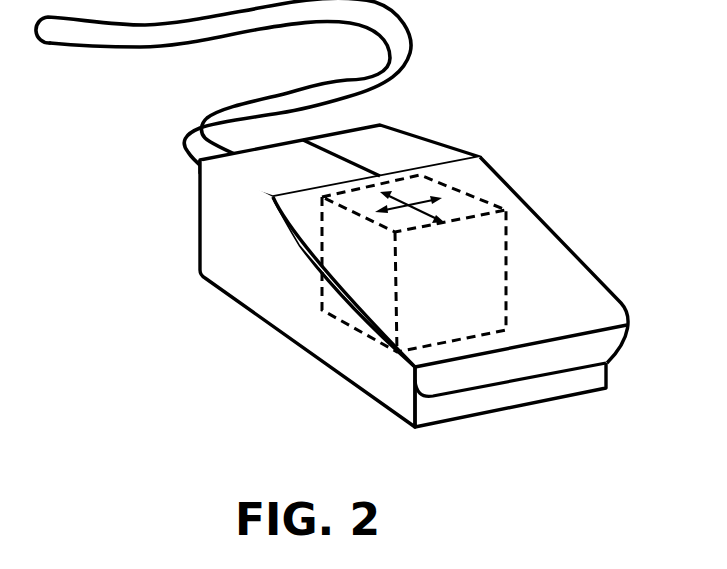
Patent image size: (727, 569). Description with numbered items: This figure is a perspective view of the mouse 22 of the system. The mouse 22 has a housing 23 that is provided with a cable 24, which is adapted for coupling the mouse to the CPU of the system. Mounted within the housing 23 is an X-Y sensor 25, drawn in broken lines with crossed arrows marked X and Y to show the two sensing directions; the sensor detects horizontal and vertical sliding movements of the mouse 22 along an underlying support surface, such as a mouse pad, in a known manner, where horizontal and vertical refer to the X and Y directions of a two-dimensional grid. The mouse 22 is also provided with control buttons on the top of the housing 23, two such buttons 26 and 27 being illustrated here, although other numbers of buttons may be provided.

The mouse 22 is at (545, 145).
The housing 23 is at (215, 266).
The cable 24 is at (157, 45).
The X-Y sensor 25 is at (506, 258).
The control button 26 is at (206, 161).
The control button 27 is at (418, 148).